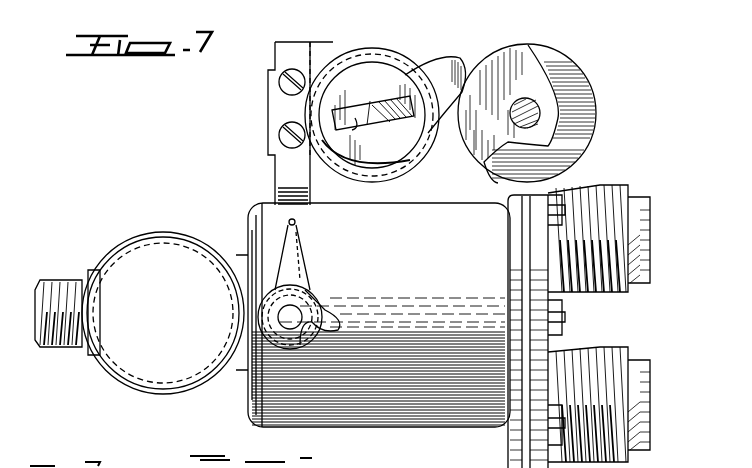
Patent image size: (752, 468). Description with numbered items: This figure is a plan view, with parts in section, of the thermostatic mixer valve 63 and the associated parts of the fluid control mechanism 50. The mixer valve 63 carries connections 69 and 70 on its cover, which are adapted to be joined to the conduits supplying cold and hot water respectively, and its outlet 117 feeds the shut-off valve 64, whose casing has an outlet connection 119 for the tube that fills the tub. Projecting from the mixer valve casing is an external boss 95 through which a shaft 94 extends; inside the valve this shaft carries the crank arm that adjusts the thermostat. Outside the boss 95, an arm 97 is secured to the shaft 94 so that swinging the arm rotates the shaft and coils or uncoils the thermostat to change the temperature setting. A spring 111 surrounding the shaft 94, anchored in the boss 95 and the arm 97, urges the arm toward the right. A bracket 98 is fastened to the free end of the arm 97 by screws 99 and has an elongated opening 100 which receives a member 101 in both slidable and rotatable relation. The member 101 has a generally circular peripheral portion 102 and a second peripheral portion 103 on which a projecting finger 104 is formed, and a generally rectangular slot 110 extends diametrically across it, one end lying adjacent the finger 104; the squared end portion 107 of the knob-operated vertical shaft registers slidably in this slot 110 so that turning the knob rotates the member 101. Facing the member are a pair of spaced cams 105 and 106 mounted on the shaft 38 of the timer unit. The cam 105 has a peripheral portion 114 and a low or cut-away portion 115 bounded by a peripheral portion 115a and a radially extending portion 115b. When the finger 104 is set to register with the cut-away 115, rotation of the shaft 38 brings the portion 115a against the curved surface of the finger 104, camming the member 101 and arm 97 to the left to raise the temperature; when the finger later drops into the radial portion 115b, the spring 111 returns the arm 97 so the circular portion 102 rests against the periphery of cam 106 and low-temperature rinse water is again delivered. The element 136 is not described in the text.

The shaft 38 is at (535, 107).
The fluid control mechanism 50 is at (242, 373).
The mixer valve 63 is at (441, 432).
The shut-off valve 64 is at (95, 275).
The connection 69 is at (625, 182).
The connection 70 is at (607, 357).
The shaft 94 is at (292, 317).
The external boss 95 is at (330, 318).
The arm 97 is at (300, 225).
The bracket 98 is at (285, 57).
The screws 99 is at (282, 128).
The elongated opening 100 is at (412, 60).
The member 101 is at (405, 168).
The circular peripheral portion 102 is at (328, 46).
The second peripheral portion 103 is at (360, 62).
The projecting finger 104 is at (465, 58).
The cam 105 is at (530, 46).
The cam 106 is at (582, 105).
The squared end portion 107 is at (362, 100).
The slot 110 is at (355, 125).
The spring 111 is at (302, 262).
The peripheral portion 114 is at (500, 48).
The cut-away portion 115 is at (560, 120).
The peripheral portion 115a is at (548, 72).
The radially extending portion 115b is at (497, 162).
The outlet 117 is at (240, 262).
The outlet connection 119 is at (62, 348).
The sight glass ring 136 is at (195, 215).